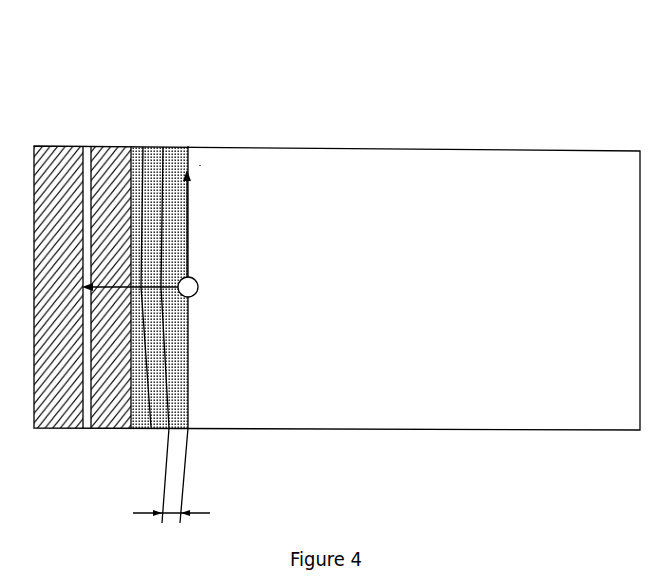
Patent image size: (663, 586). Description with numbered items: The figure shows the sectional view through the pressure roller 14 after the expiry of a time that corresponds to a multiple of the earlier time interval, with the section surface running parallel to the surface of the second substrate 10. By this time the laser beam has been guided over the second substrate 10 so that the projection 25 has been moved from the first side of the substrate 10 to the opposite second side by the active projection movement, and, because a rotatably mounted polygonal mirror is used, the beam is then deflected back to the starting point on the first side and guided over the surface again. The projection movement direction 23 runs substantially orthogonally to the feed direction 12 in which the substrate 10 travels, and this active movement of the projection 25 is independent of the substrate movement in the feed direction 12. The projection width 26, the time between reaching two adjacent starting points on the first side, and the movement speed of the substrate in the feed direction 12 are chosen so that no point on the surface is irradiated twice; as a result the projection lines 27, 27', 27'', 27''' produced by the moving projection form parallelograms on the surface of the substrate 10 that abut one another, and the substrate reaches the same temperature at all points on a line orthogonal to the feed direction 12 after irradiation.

The second substrate 10 is at (287, 165).
The feed direction 12 is at (104, 292).
The pressure roller 14 is at (56, 175).
The projection movement direction 23 is at (188, 227).
The projection 25 is at (192, 297).
The projection width 26 is at (143, 513).
The projection line 27 is at (152, 224).
The projection line 27' is at (184, 272).
The projection line 27'' is at (215, 272).
The projection line 27''' is at (248, 94).